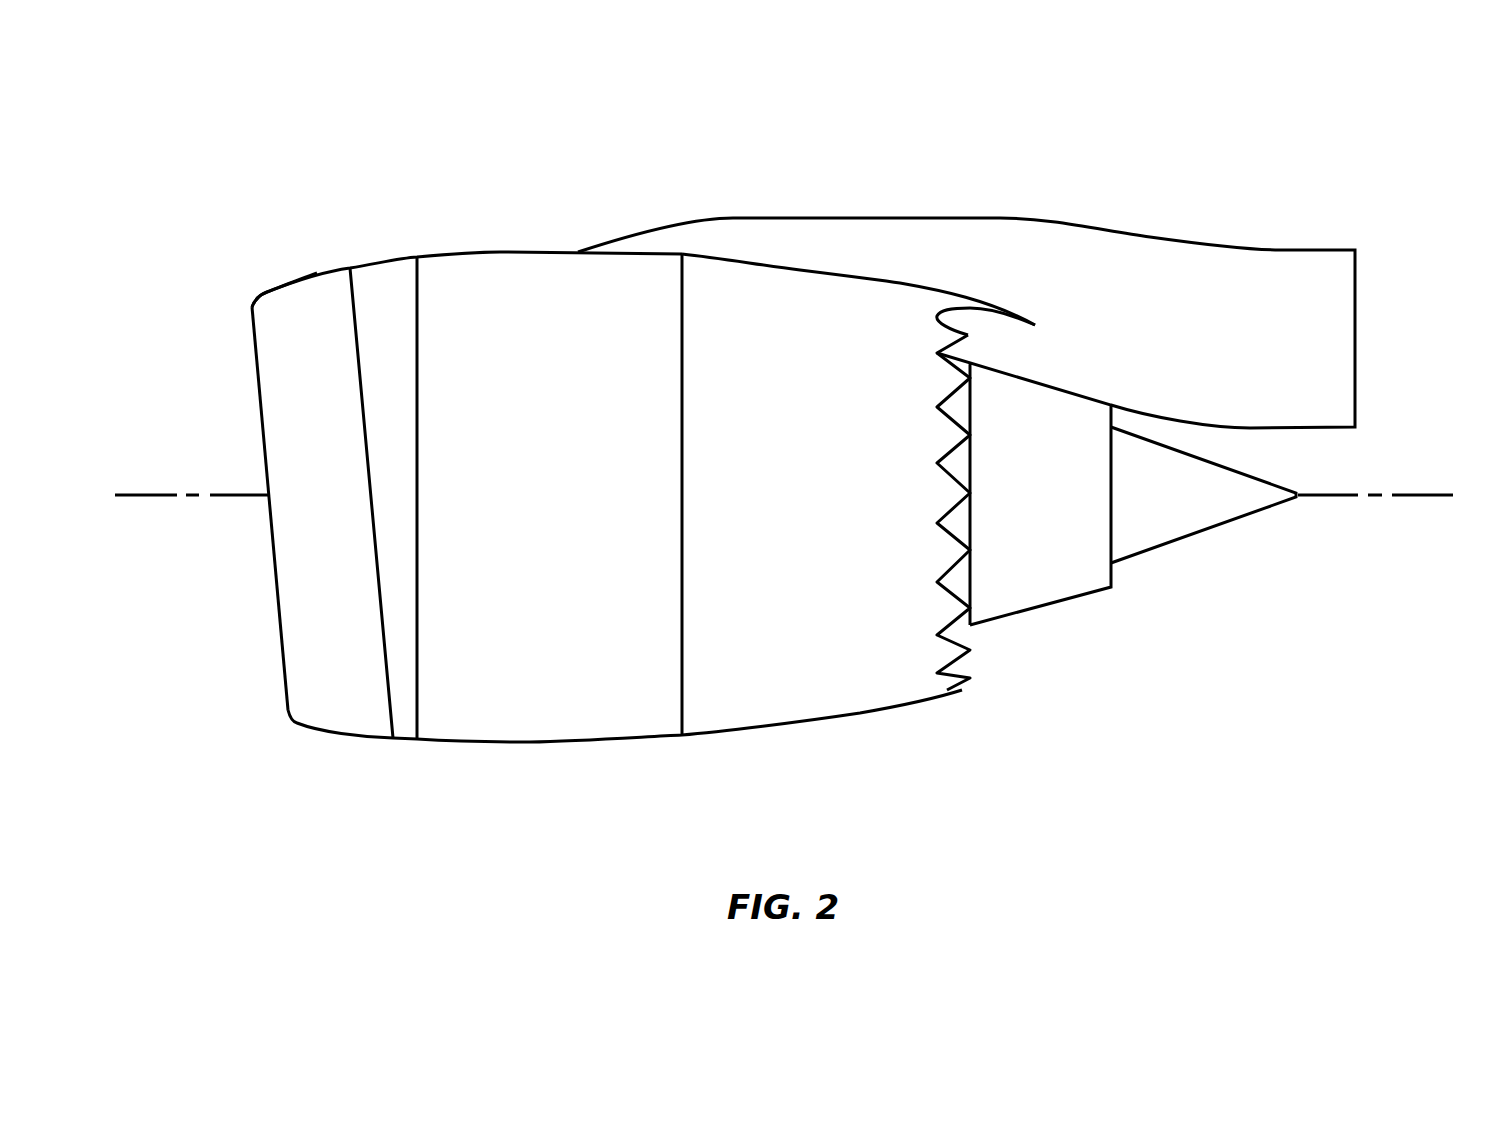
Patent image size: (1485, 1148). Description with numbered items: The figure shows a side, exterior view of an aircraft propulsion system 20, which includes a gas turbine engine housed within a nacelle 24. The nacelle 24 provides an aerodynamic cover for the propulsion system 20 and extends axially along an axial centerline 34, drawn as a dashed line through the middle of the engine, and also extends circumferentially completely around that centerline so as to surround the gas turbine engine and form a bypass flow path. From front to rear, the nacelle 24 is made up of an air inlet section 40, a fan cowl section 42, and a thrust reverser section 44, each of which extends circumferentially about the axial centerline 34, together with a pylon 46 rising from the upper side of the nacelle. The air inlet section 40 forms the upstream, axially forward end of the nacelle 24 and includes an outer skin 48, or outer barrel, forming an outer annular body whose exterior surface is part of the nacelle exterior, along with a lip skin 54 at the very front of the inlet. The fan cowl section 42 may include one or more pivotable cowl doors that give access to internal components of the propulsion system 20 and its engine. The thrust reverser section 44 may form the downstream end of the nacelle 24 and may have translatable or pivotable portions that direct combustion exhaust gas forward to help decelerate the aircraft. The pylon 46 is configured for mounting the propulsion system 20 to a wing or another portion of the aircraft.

The propulsion system 20 is at (1230, 139).
The nacelle 24 is at (950, 715).
The axial centerline 34 is at (1445, 497).
The air inlet section 40 is at (385, 226).
The fan cowl section 42 is at (509, 767).
The thrust reverser section 44 is at (851, 255).
The pylon 46 is at (1005, 242).
The outer skin 48 is at (317, 273).
The lip skin 54 is at (267, 292).